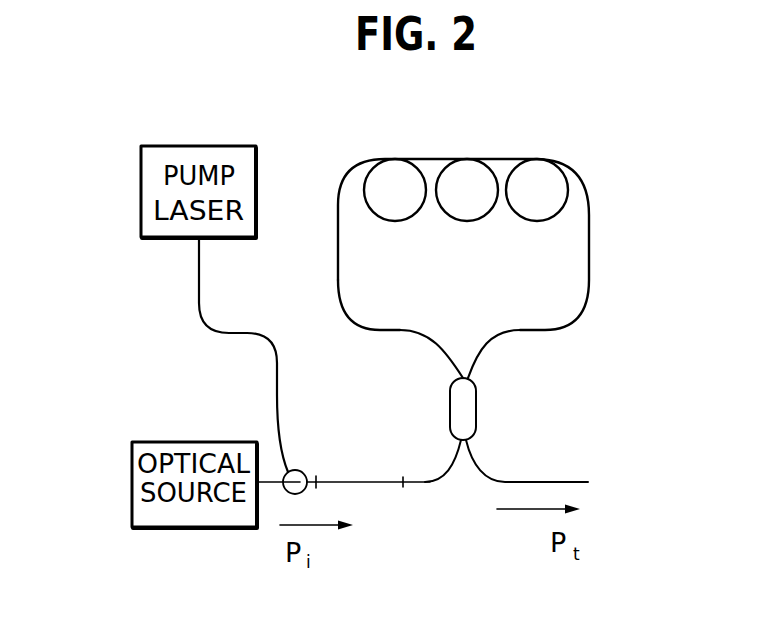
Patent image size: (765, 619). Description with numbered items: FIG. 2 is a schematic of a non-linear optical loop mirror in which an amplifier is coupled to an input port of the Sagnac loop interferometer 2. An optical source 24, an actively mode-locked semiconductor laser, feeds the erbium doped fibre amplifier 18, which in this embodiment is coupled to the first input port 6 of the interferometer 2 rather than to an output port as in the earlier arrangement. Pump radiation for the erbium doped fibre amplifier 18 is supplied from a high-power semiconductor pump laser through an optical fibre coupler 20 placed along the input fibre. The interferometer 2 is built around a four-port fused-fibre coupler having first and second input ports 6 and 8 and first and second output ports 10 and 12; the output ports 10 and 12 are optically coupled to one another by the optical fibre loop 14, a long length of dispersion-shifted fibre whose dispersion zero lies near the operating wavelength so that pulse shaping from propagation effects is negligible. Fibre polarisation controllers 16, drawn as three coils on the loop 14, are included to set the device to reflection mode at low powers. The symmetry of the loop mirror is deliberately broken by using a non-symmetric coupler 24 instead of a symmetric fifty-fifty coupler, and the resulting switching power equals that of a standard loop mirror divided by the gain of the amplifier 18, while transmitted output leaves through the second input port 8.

The Sagnac loop interferometer 2 is at (496, 259).
The first input port 6 is at (440, 483).
The second input port 8 is at (472, 470).
The first output port 10 is at (449, 358).
The second output port 12 is at (478, 358).
The optical fibre loop 14 is at (589, 193).
The fibre polarisation controllers 16 is at (470, 172).
The erbium doped fibre amplifier 18 is at (373, 482).
The optical fibre coupler 20 is at (306, 470).
The non-symmetric coupler 24 is at (477, 425).